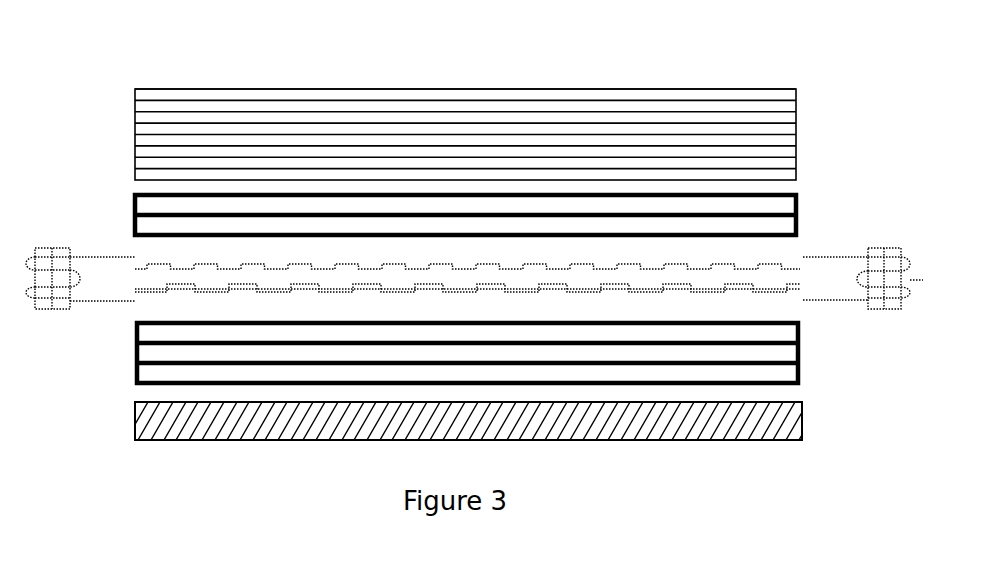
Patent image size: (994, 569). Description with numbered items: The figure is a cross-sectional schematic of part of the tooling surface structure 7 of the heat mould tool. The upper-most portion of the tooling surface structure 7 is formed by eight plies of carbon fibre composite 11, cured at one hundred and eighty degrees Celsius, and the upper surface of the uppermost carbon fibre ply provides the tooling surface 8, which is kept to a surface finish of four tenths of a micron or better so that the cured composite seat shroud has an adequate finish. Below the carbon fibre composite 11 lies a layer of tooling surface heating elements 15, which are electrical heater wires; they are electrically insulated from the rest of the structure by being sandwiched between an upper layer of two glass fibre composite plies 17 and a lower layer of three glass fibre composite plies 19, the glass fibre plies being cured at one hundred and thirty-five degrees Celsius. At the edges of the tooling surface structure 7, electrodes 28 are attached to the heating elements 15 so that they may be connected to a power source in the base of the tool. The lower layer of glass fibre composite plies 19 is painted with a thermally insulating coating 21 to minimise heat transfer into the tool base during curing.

The tooling surface structure 7 is at (131, 61).
The tooling surface 8 is at (679, 89).
The carbon fibre composite 11 is at (135, 131).
The tooling surface heating elements 15 is at (785, 291).
The upper layer of two glass fibre composite plies 17 is at (797, 211).
The lower layer of three glass fibre composite plies 19 is at (136, 358).
The thermally insulating coating 21 is at (272, 442).
The electrodes 28 is at (52, 266).